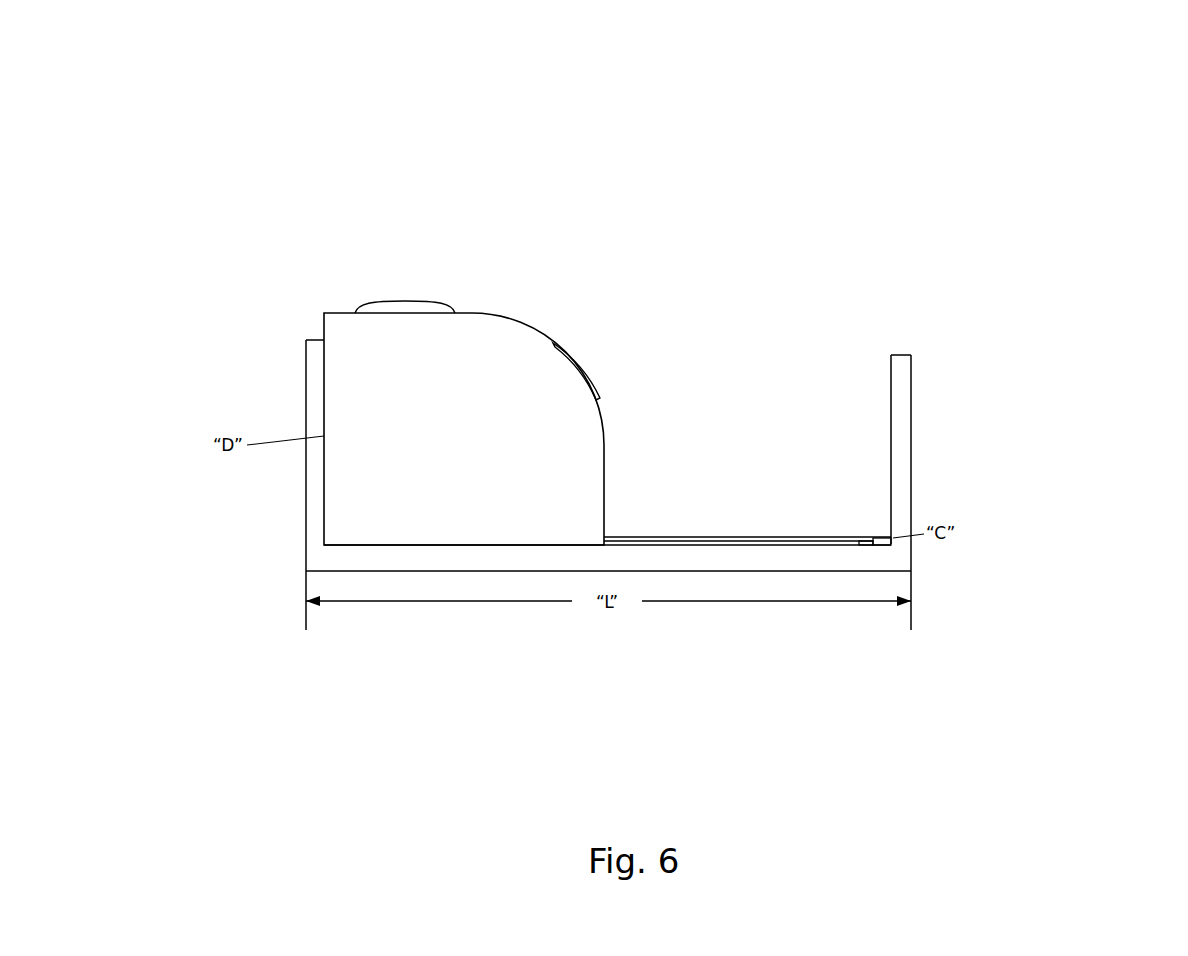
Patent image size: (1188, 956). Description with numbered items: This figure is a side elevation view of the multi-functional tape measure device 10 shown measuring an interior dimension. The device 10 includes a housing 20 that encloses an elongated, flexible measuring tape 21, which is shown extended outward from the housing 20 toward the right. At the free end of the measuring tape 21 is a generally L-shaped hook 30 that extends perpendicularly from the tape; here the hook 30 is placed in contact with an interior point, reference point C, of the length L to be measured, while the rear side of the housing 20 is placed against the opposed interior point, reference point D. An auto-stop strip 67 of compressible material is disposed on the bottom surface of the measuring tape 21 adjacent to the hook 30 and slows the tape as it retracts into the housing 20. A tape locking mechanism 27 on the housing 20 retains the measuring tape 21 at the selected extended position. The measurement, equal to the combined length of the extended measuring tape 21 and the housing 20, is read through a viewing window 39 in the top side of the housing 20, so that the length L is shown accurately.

The device 10 is at (1020, 163).
The housing 20 is at (333, 294).
The viewing window 39 is at (406, 308).
The tape locking mechanism 27 is at (562, 347).
The measuring tape 21 is at (701, 537).
The hook 30 is at (880, 537).
The auto-stop strip 67 is at (866, 546).